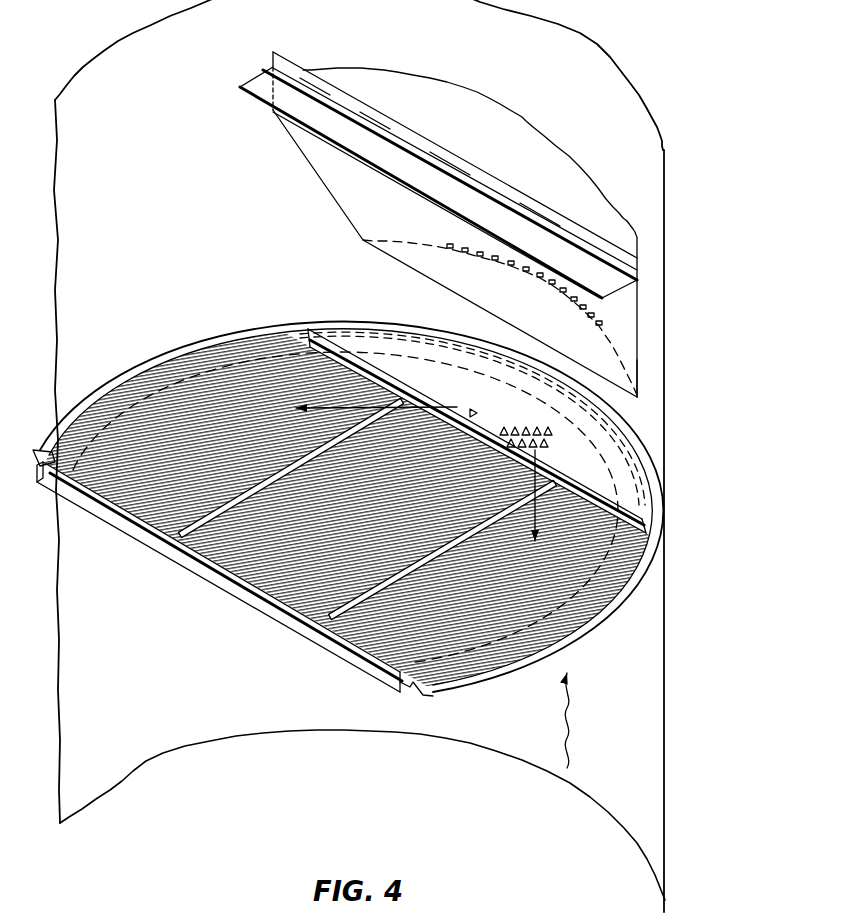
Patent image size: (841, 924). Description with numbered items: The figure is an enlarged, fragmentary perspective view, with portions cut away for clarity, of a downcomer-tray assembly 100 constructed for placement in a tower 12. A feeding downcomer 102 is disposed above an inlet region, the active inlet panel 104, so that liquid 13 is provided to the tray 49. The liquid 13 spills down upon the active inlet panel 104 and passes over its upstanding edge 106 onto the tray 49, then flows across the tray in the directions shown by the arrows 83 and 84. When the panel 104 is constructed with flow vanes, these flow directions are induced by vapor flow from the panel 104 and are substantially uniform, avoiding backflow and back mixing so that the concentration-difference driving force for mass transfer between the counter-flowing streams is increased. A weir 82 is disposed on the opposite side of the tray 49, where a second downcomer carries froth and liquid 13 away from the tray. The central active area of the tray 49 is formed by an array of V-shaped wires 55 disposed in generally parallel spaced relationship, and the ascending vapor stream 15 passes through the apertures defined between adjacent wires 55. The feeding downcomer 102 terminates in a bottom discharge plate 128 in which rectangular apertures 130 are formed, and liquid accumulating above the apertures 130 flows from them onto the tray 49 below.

The tower 12 is at (674, 757).
The liquid 13 is at (452, 272).
The ascending vapor stream 15 is at (570, 733).
The tray 49 is at (468, 635).
The V-shaped wires 55 is at (197, 416).
The weir 82 is at (307, 632).
The arrow 83 is at (406, 421).
The arrow 84 is at (528, 511).
The downcomer-tray assembly 100 is at (436, 224).
The feeding downcomer 102 is at (329, 165).
The active inlet panel 104 is at (619, 497).
The upstanding edge 106 is at (309, 336).
The bottom discharge plate 128 is at (636, 394).
The rectangular apertures 130 is at (580, 306).